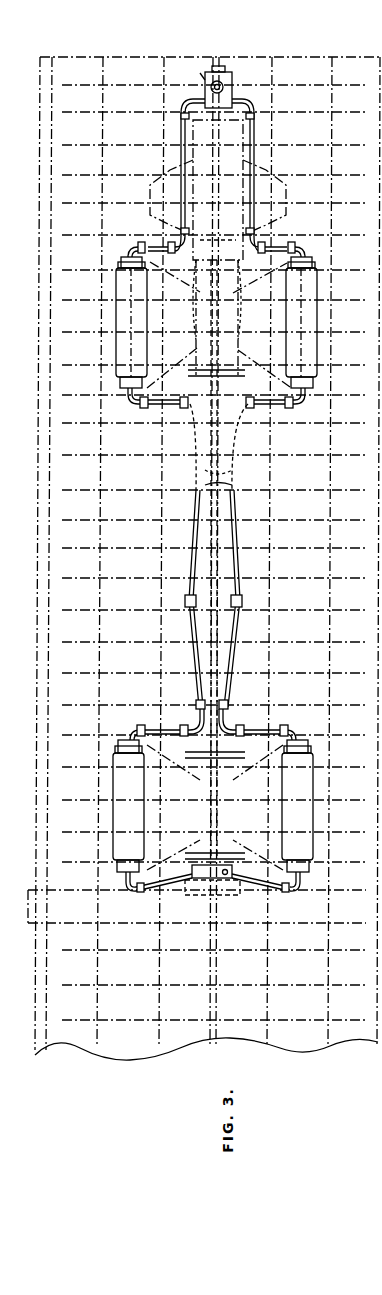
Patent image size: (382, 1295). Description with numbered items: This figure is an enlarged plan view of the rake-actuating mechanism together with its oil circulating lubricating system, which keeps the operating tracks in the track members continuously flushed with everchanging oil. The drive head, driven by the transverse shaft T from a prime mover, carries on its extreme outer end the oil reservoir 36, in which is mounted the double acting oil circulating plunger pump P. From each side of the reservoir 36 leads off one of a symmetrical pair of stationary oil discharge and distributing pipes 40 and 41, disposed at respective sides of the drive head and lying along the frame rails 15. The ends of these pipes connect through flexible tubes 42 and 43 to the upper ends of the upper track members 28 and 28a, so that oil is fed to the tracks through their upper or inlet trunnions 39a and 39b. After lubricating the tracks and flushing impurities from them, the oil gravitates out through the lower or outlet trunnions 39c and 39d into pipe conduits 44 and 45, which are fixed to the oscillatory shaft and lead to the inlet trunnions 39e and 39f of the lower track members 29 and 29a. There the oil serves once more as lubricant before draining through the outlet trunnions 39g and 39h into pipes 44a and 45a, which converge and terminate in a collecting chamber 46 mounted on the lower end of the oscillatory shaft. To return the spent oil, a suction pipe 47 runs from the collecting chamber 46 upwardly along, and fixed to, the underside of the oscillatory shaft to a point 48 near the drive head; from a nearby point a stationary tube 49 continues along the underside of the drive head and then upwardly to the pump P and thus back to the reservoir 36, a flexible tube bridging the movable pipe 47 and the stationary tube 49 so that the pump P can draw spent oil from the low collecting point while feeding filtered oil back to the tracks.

The oil circulating plunger pump P is at (200, 72).
The transverse shaft T is at (300, 88).
The frame side rail 15 is at (117, 244).
The upper track member 28 is at (126, 314).
The upper track member 28a is at (309, 318).
The lower track member 29 is at (124, 786).
The lower track member 29a is at (305, 795).
The oil reservoir 36 is at (232, 82).
The upper trunnion 39a is at (125, 252).
The upper trunnion 39b is at (308, 252).
The lower track trunnion 39c is at (125, 400).
The lower track trunnion 39d is at (308, 400).
The inlet trunnion 39e is at (133, 735).
The inlet trunnion 39f is at (295, 735).
The outlet trunnion 39g is at (128, 884).
The outlet trunnion 39h is at (300, 884).
The oil discharge and distributing pipe 40 is at (182, 120).
The oil discharge and distributing pipe 41 is at (254, 128).
The flexible tube 42 is at (162, 242).
The flexible tube 43 is at (298, 244).
The pipe conduit 44 is at (197, 504).
The pipe 44a is at (165, 888).
The pipe conduit 45 is at (232, 503).
The pipe 45a is at (262, 888).
The collecting chamber 46 is at (212, 880).
The suction pipe 47 is at (236, 328).
The point near the drive head 48 is at (210, 317).
The stationary tube 49 is at (216, 243).